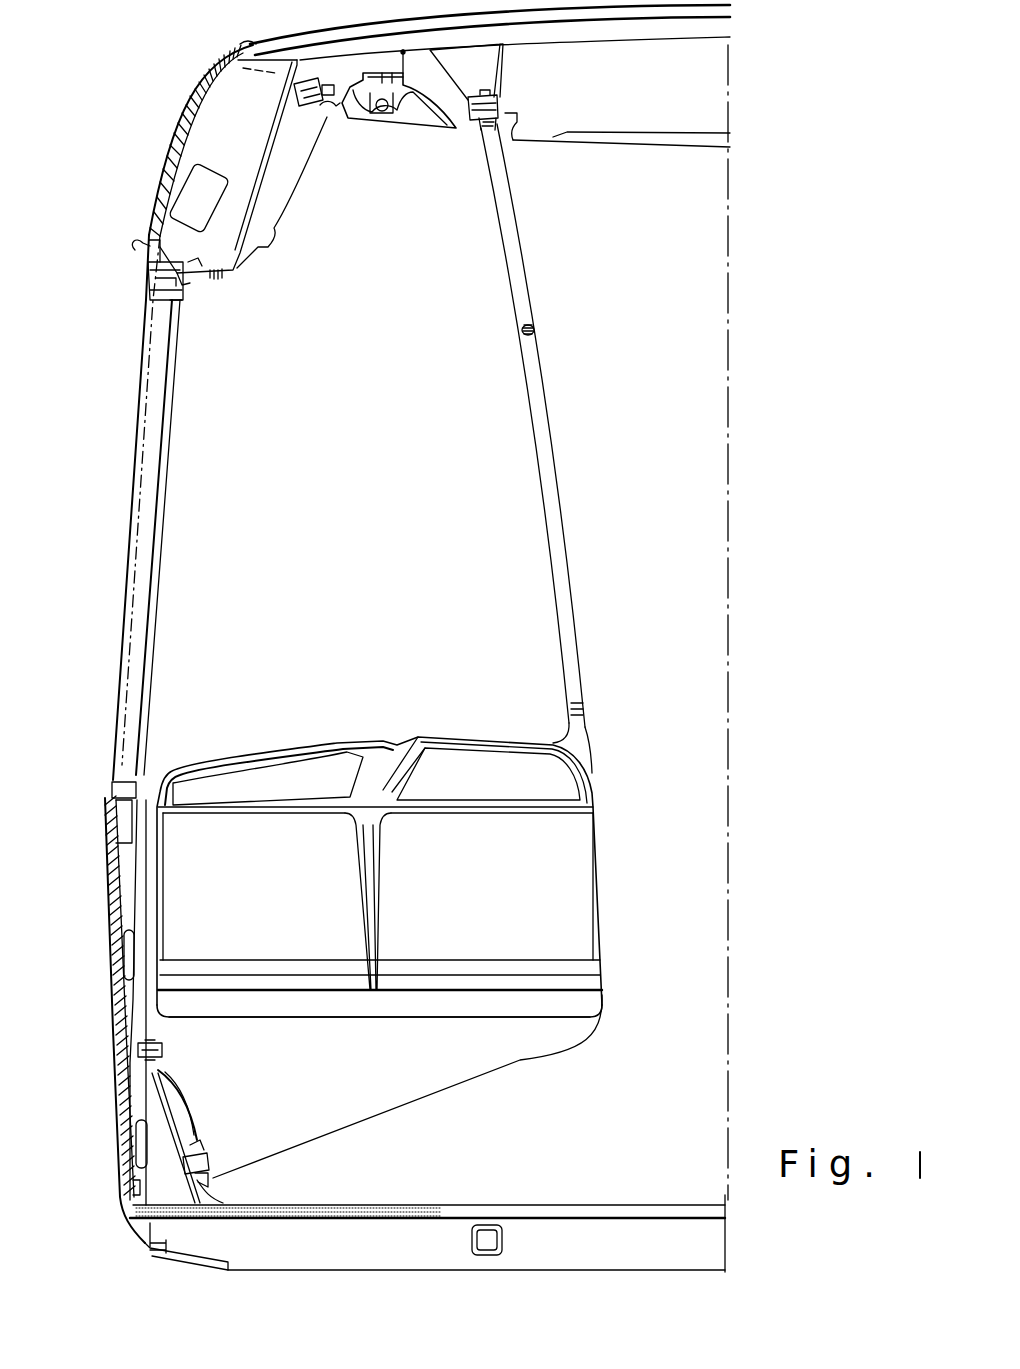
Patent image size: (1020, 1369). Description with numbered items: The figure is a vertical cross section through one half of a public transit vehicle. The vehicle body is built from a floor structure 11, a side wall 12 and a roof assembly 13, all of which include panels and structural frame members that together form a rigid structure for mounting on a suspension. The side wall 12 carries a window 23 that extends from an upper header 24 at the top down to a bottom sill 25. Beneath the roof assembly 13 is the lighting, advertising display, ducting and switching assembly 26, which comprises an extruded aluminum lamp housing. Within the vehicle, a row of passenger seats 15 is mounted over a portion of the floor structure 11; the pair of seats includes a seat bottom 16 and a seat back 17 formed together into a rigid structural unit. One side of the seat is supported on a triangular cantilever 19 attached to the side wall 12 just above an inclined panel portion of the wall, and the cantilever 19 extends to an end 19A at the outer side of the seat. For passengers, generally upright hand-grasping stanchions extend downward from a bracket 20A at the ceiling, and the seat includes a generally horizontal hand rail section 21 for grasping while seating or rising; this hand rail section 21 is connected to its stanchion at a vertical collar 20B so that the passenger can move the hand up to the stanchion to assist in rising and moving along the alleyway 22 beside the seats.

The floor structure 11 is at (334, 1200).
The side wall 12 is at (158, 703).
The roof assembly 13 is at (553, 44).
The passenger seats 15 is at (286, 748).
The seat bottom 16 is at (273, 1006).
The seat back 17 is at (270, 897).
The triangular cantilever 19 is at (440, 1068).
The end of cantilever 19A is at (198, 1129).
The bracket 20A is at (500, 118).
The vertical collar 20B is at (578, 709).
The hand rail sections 21 is at (469, 748).
The alleyway 22 is at (694, 1057).
The window 23 is at (118, 492).
The upper header 24 is at (131, 261).
The bottom sill 25 is at (110, 732).
The lighting, advertising display, ducting and switching assembly 26 is at (349, 130).